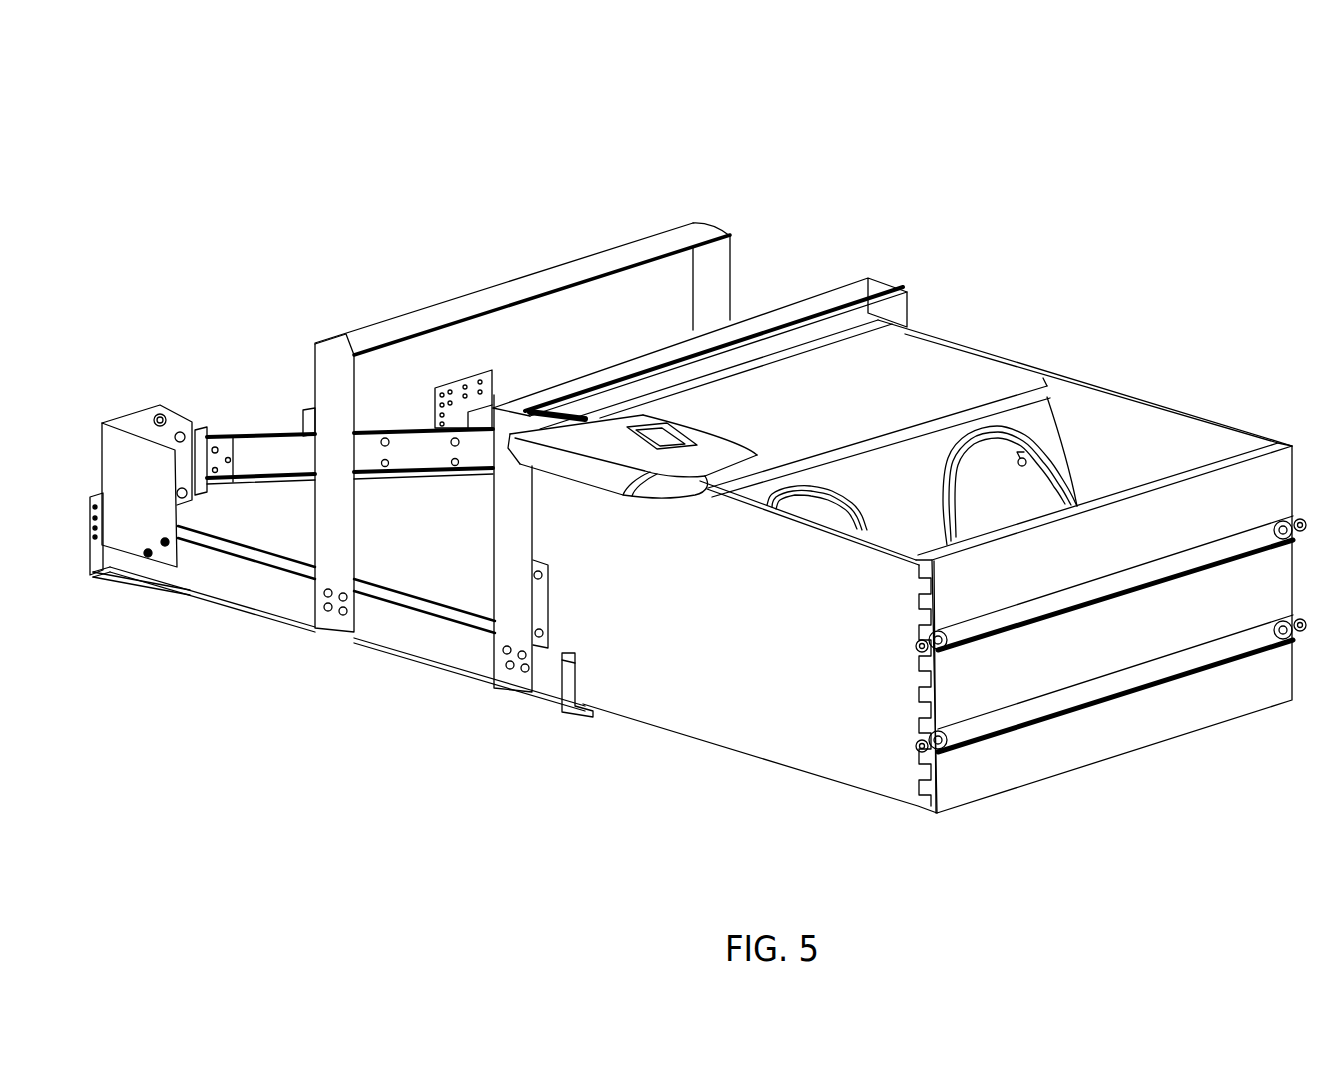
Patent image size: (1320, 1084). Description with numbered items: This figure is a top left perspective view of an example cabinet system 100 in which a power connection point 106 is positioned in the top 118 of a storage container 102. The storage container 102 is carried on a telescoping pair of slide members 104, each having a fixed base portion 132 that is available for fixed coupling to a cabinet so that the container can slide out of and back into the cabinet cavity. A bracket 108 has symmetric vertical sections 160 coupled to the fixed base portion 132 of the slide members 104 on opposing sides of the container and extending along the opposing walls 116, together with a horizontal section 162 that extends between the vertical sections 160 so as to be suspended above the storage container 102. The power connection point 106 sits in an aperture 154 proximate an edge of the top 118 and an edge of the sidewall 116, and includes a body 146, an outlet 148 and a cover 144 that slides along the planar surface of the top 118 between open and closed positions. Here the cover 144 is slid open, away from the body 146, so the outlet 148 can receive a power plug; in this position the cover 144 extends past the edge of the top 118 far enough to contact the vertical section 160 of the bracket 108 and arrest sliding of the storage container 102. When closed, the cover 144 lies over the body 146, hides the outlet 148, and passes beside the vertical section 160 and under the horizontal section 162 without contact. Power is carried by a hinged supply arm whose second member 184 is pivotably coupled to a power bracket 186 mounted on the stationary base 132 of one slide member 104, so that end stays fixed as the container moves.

The cabinet system 100 is at (488, 67).
The storage container 102 is at (1113, 363).
The slide members 104 is at (190, 670).
The power connection point 106 is at (743, 406).
The bracket 108 is at (526, 308).
The walls 116 is at (822, 736).
The top 118 is at (908, 362).
The fixed base portion 132 is at (240, 580).
The cover 144 is at (653, 483).
The body 146 is at (717, 450).
The outlet 148 is at (663, 433).
The aperture 154 is at (693, 430).
The vertical sections 160 is at (518, 577).
The horizontal section 162 is at (750, 318).
The second member 184 is at (272, 455).
The power bracket 186 is at (152, 359).